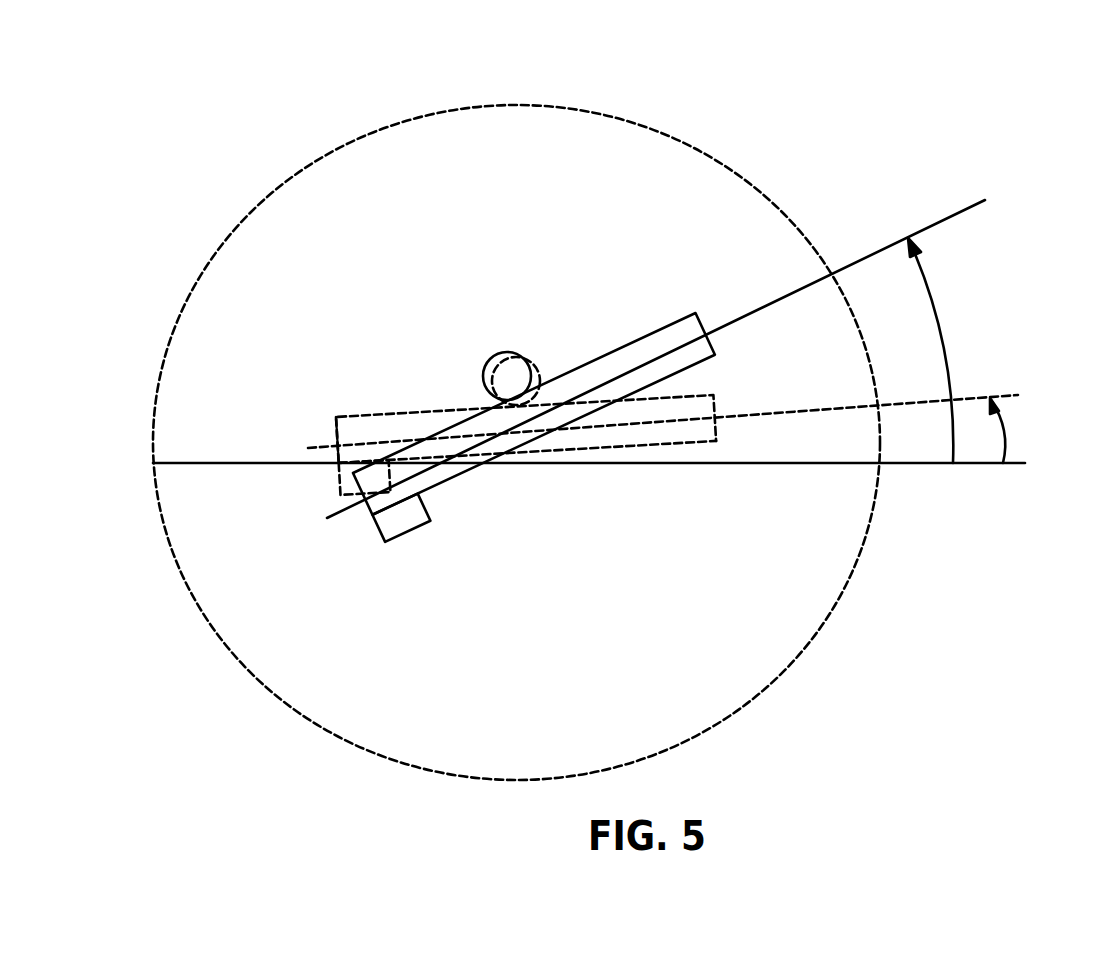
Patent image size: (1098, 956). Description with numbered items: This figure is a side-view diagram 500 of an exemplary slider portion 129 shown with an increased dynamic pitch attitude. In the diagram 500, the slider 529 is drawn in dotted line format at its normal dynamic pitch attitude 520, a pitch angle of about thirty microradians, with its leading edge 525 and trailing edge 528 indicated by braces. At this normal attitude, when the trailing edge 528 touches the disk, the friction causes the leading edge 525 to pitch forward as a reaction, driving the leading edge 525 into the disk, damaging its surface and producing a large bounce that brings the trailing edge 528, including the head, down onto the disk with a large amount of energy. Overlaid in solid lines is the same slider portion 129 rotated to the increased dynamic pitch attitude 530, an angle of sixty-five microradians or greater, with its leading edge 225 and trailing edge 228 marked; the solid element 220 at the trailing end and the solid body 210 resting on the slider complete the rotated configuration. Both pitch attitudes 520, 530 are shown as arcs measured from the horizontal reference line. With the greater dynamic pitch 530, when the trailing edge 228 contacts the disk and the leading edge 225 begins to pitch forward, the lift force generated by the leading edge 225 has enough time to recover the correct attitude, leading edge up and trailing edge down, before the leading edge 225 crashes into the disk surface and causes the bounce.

The diagram 500 is at (525, 66).
The slider portion 129 is at (590, 368).
The leading edge 225 is at (692, 295).
The mirror mount 220 is at (420, 528).
The pivot shaft 210 is at (500, 352).
The leading edge 525 is at (722, 485).
The slider 529 is at (622, 448).
The trailing edge 528 is at (408, 382).
The trailing edge 228 is at (398, 552).
The normal dynamic pitch attitude 520 is at (345, 487).
The increased dynamic pitch attitude 530 is at (947, 350).